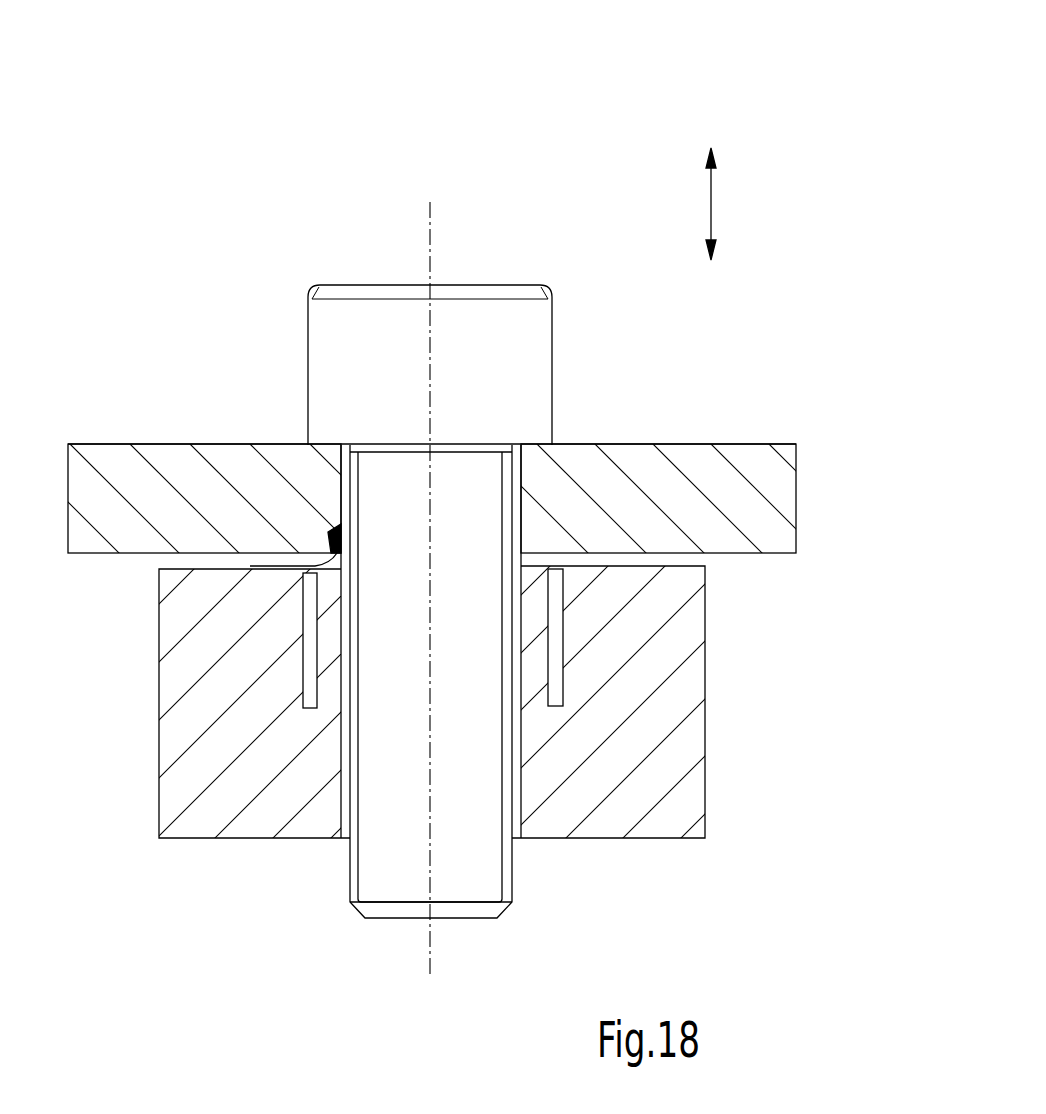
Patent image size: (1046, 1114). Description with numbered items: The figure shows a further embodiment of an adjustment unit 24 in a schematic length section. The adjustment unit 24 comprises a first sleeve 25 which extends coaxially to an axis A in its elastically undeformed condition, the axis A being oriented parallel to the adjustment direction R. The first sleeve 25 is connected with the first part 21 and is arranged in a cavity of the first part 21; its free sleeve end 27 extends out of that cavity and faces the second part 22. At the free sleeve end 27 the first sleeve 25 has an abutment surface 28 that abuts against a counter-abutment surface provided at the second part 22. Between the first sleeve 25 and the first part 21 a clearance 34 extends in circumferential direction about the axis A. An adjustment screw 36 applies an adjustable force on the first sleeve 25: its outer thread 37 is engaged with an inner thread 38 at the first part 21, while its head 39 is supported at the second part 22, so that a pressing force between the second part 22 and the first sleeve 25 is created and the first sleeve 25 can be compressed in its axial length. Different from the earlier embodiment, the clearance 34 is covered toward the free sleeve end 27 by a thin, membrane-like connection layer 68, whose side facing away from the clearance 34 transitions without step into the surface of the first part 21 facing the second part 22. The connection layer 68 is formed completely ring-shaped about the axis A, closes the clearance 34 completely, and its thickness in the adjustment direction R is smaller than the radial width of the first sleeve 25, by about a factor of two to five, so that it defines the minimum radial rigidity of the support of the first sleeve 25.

The adjustment unit 24 is at (621, 165).
The axis A is at (431, 255).
The adjustment direction R is at (712, 210).
The head 39 is at (307, 350).
The abutment surface 28 is at (335, 537).
The adjustment screw 36 is at (470, 527).
The second part 22 is at (772, 488).
The free sleeve end 27 is at (253, 570).
The connection layer 68 is at (556, 578).
The first sleeve 25 is at (335, 640).
The first part 21 is at (690, 697).
The inner thread 38 is at (343, 813).
The outer thread 37 is at (355, 785).
The clearance 34 is at (556, 710).